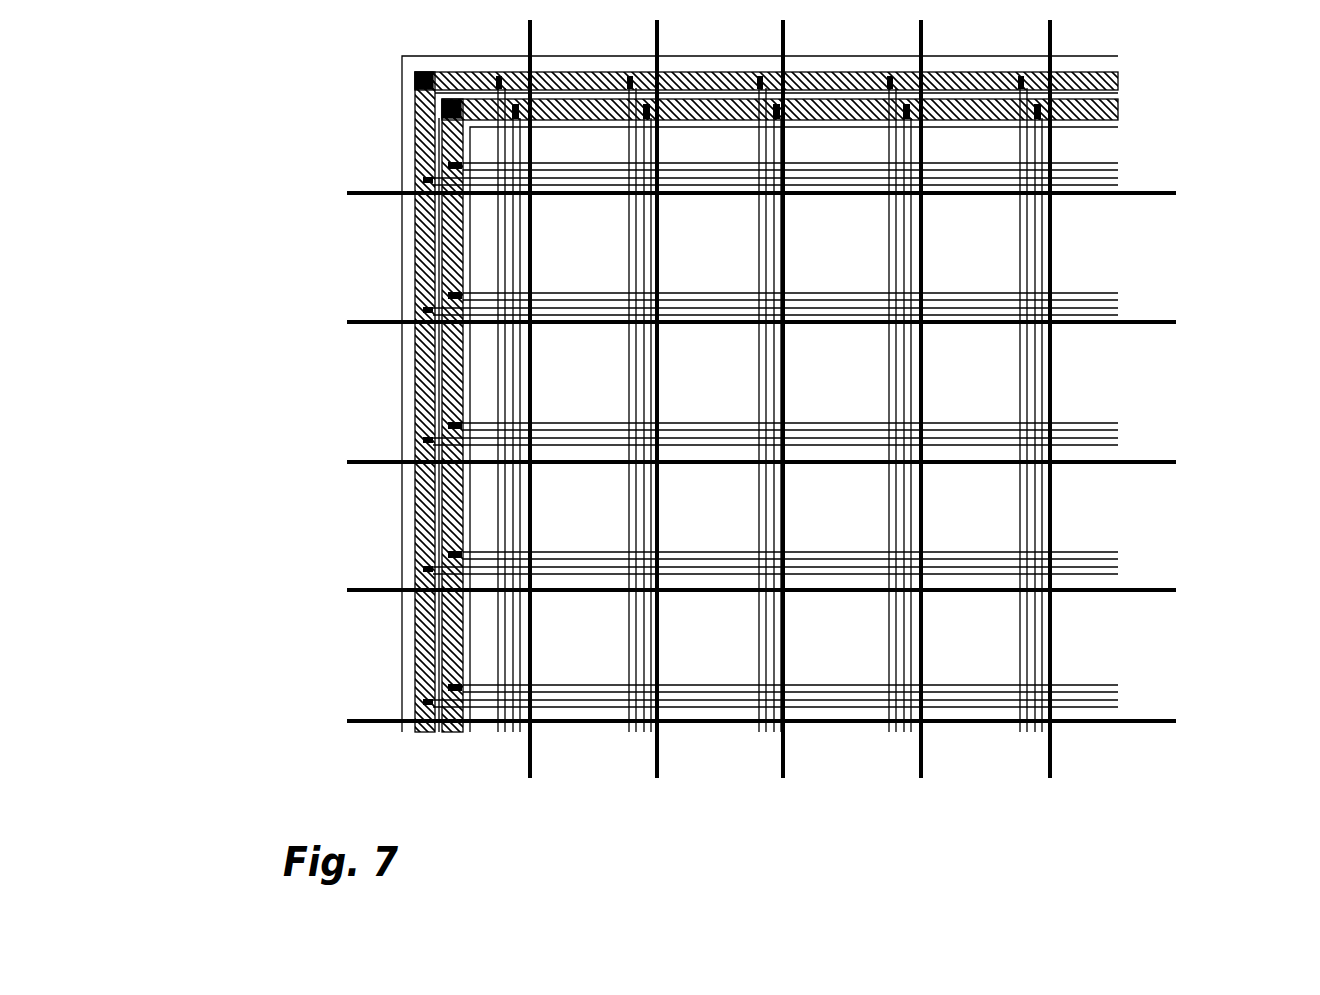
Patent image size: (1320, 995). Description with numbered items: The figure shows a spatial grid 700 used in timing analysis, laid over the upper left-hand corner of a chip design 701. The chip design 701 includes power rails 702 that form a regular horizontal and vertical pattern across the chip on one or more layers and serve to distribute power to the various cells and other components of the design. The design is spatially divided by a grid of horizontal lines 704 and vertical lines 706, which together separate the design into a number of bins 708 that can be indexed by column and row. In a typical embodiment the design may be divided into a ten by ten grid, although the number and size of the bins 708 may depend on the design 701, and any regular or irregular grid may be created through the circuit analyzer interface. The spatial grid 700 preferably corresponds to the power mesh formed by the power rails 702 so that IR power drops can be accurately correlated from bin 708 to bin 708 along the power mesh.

The spatial grid 700 is at (1223, 128).
The chip design 701 is at (403, 98).
The power rails 702 is at (635, 243).
The horizontal lines 704 is at (1096, 323).
The vertical lines 706 is at (657, 760).
The bins 708 is at (859, 522).